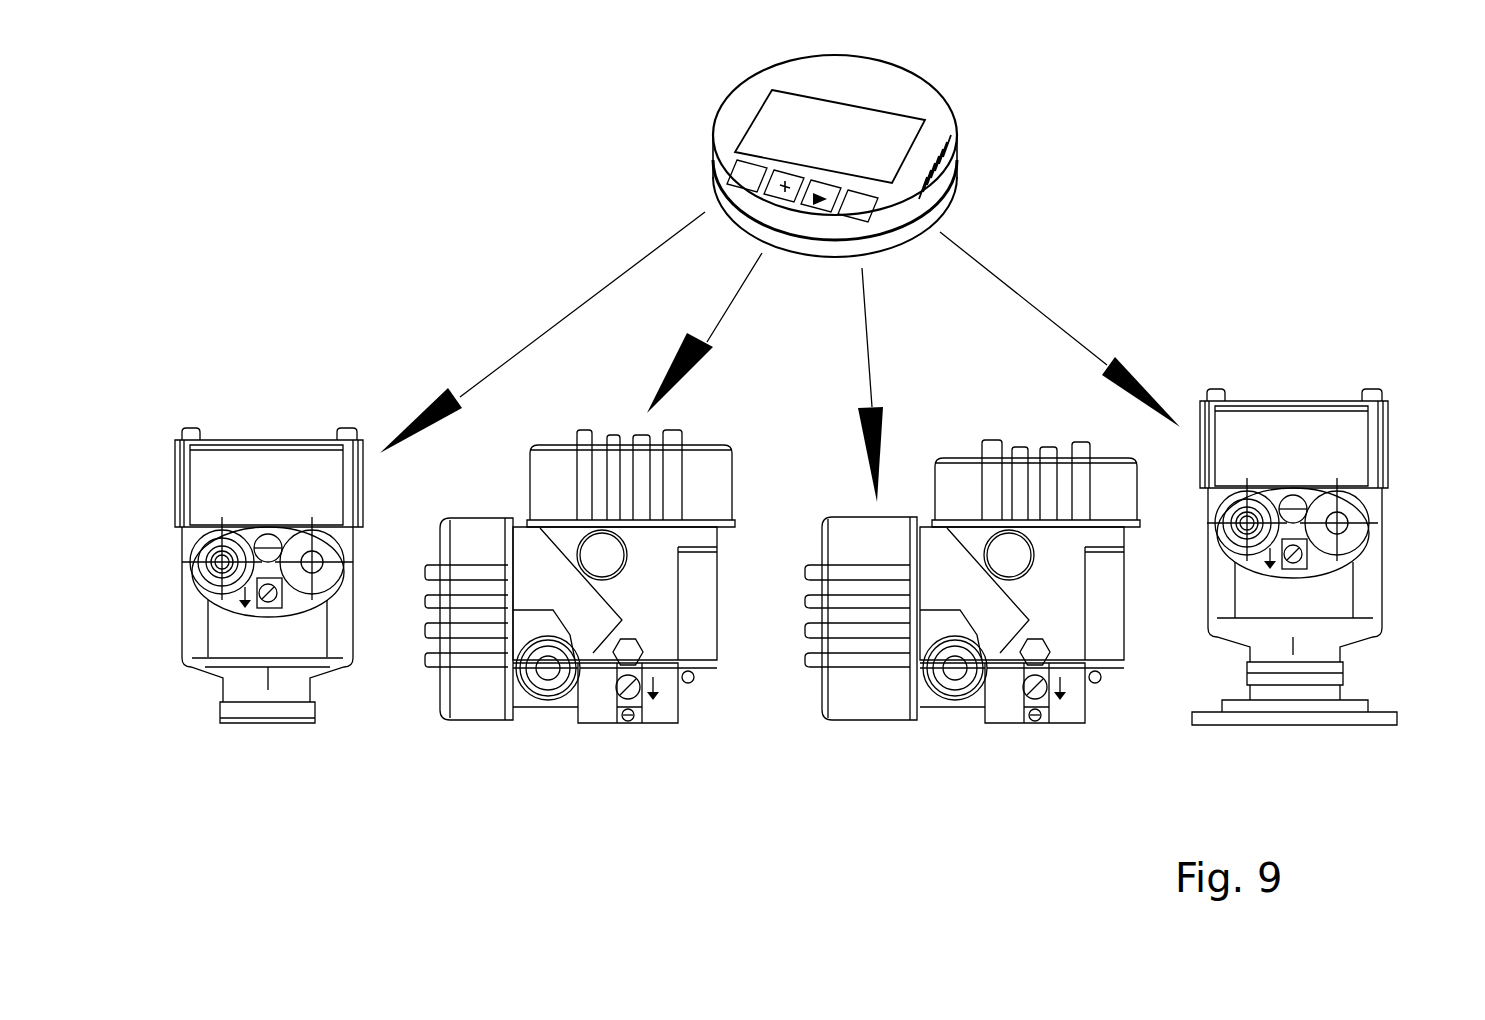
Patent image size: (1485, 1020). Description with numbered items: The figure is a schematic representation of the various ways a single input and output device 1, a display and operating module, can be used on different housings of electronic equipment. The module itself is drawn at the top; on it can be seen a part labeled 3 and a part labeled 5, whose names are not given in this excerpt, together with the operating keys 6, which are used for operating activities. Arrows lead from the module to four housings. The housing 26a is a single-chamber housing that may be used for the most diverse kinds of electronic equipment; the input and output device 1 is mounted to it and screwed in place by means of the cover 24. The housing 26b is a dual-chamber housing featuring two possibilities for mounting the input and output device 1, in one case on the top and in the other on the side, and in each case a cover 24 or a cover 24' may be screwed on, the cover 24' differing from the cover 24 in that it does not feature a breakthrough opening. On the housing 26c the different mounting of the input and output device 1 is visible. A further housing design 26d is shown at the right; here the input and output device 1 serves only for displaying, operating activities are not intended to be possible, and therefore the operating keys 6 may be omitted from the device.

The input and output device 1 is at (965, 126).
The display 3 is at (890, 135).
The operating keys 5 is at (730, 186).
The operating keys 6 is at (890, 207).
The cover 24 is at (786, 601).
The cover 24' is at (782, 590).
The housing 26a is at (255, 708).
The housing 26b is at (665, 713).
The housing 26c is at (1065, 715).
The housing design 26d is at (1305, 670).